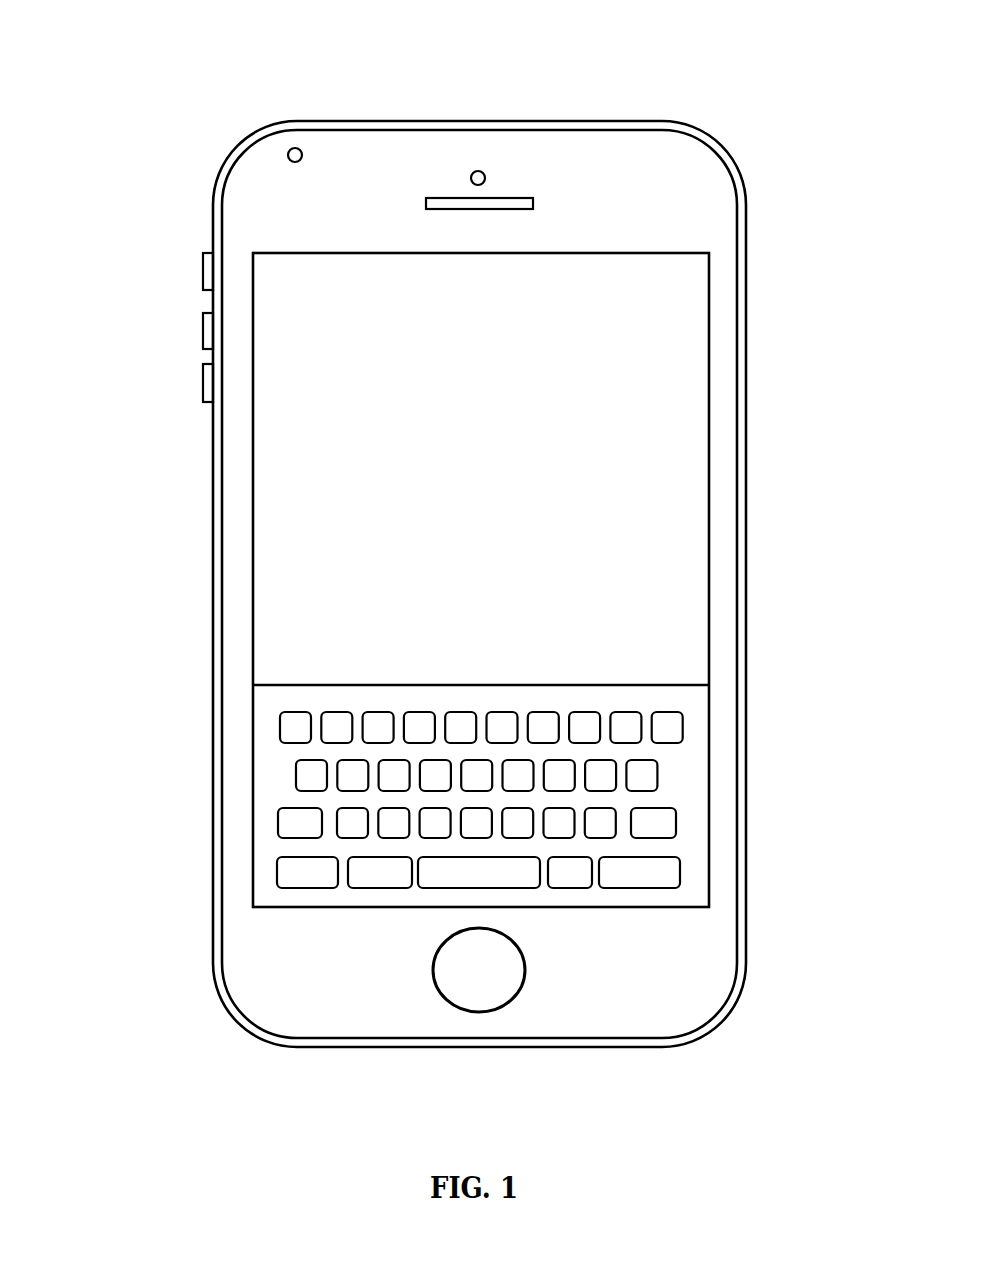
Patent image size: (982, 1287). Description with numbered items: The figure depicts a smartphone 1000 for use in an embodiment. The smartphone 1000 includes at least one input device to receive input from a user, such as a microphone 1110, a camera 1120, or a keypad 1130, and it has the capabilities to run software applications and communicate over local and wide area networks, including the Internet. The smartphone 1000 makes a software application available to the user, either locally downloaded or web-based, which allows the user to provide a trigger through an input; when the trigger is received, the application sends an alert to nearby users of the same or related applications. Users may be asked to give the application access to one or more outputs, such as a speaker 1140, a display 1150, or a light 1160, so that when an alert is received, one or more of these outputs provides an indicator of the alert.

The smartphone 1000 is at (746, 89).
The microphone 1110 is at (335, 1081).
The camera 1120 is at (477, 171).
The keypad 1130 is at (267, 818).
The speaker 1140 is at (533, 202).
The display 1150 is at (533, 397).
The light 1160 is at (292, 148).